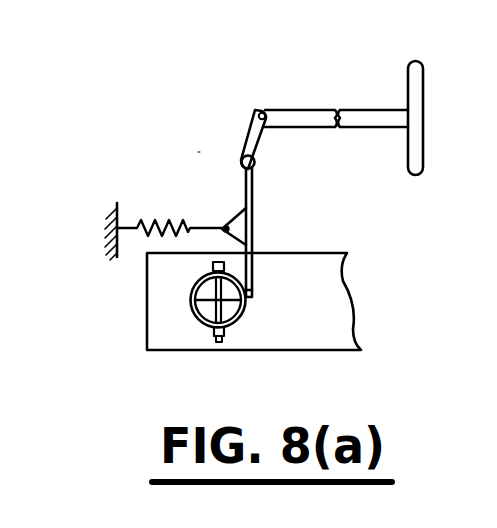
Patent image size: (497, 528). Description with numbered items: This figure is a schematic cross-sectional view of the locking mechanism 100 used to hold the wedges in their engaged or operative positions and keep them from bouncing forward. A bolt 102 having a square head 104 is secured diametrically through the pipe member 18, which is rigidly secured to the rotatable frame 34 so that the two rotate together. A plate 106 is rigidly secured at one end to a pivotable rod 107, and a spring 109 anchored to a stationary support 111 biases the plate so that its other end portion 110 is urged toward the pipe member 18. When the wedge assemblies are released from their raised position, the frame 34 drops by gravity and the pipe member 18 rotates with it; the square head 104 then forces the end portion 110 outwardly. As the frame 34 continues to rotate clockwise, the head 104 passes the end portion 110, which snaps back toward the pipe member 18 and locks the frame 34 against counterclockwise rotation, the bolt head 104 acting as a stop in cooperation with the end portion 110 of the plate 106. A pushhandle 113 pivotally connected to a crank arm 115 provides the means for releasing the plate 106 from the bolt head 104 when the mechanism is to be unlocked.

The locking mechanism 100 is at (198, 152).
The bolt 102 is at (195, 302).
The square head 104 is at (210, 268).
The plate 106 is at (250, 268).
The pivotable rod 107 is at (257, 165).
The spring 109 is at (168, 222).
The end portion 110 is at (253, 297).
The stationary support 111 is at (115, 205).
The pushhandle 113 is at (302, 110).
The crank arm 115 is at (245, 128).
The rotatable frame 34 is at (352, 297).
The pipe member 18 is at (197, 328).